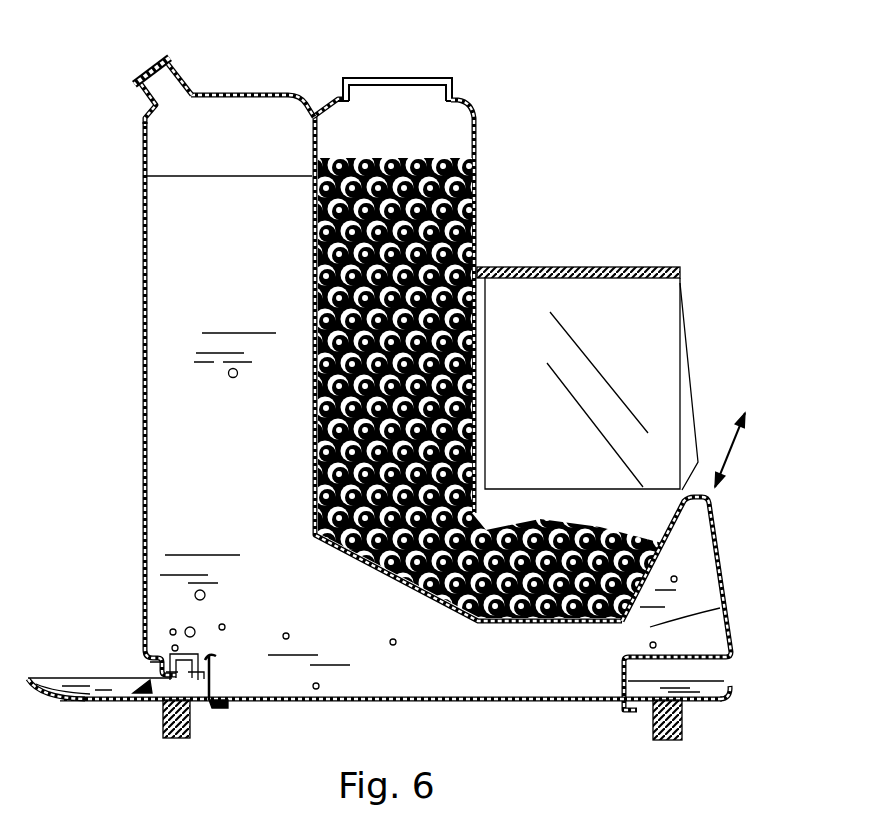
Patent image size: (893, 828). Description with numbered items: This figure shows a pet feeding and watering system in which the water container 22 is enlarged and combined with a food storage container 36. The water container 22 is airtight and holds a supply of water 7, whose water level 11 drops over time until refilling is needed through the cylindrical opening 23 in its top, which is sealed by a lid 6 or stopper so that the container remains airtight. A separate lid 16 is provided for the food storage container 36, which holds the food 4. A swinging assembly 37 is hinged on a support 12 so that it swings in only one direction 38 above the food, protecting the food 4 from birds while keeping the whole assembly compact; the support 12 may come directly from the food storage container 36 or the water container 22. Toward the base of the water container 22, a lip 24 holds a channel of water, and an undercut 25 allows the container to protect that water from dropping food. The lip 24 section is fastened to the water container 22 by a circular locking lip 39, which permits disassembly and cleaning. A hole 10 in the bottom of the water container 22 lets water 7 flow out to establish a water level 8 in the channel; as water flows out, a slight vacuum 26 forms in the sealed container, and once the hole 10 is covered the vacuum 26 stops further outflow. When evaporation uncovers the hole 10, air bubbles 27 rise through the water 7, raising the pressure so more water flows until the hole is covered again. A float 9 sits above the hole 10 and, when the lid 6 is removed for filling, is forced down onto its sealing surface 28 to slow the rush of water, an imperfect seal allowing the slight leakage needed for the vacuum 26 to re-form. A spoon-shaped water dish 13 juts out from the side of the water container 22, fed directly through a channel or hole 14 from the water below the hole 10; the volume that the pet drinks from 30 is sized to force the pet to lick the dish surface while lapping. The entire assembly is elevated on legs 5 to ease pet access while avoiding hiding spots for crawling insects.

The food 4 is at (545, 525).
The legs 5 is at (196, 728).
The lid 6 is at (146, 70).
The water 7 is at (160, 240).
The water level 8 is at (700, 681).
The float 9 is at (197, 660).
The hole 10 is at (162, 705).
The water level 11 is at (190, 176).
The support 12 is at (620, 268).
The water dish 13 is at (86, 705).
The channel or hole 14 is at (138, 694).
The lid 16 is at (410, 77).
The water container 22 is at (143, 300).
The cylindrical opening 23 is at (186, 86).
The lip 24 is at (733, 690).
The undercut 25 is at (690, 652).
The vacuum 26 is at (268, 140).
The air bubbles 27 is at (193, 650).
The sealing surface 28 is at (216, 708).
The volume that the pet drinks from 30 is at (74, 677).
The food storage container 36 is at (480, 135).
The swinging assembly 37 is at (690, 343).
The direction 38 is at (742, 455).
The locking lip 39 is at (615, 708).